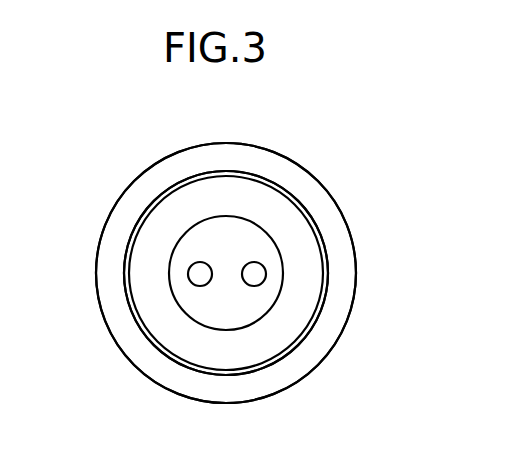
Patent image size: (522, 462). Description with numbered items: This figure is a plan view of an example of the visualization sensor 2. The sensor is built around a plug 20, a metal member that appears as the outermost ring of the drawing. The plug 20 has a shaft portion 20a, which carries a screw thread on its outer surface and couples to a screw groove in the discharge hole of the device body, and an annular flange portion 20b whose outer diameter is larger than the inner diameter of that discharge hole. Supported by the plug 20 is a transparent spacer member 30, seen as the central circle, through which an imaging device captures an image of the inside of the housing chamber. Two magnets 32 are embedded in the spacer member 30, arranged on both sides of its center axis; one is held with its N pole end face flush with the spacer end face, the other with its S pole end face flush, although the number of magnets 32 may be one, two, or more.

The visualization sensor 2 is at (321, 153).
The plug 20 is at (96, 275).
The shaft portion 20a is at (303, 278).
The flange portion 20b is at (357, 262).
The spacer member 30 is at (227, 242).
The magnets 32 is at (254, 275).